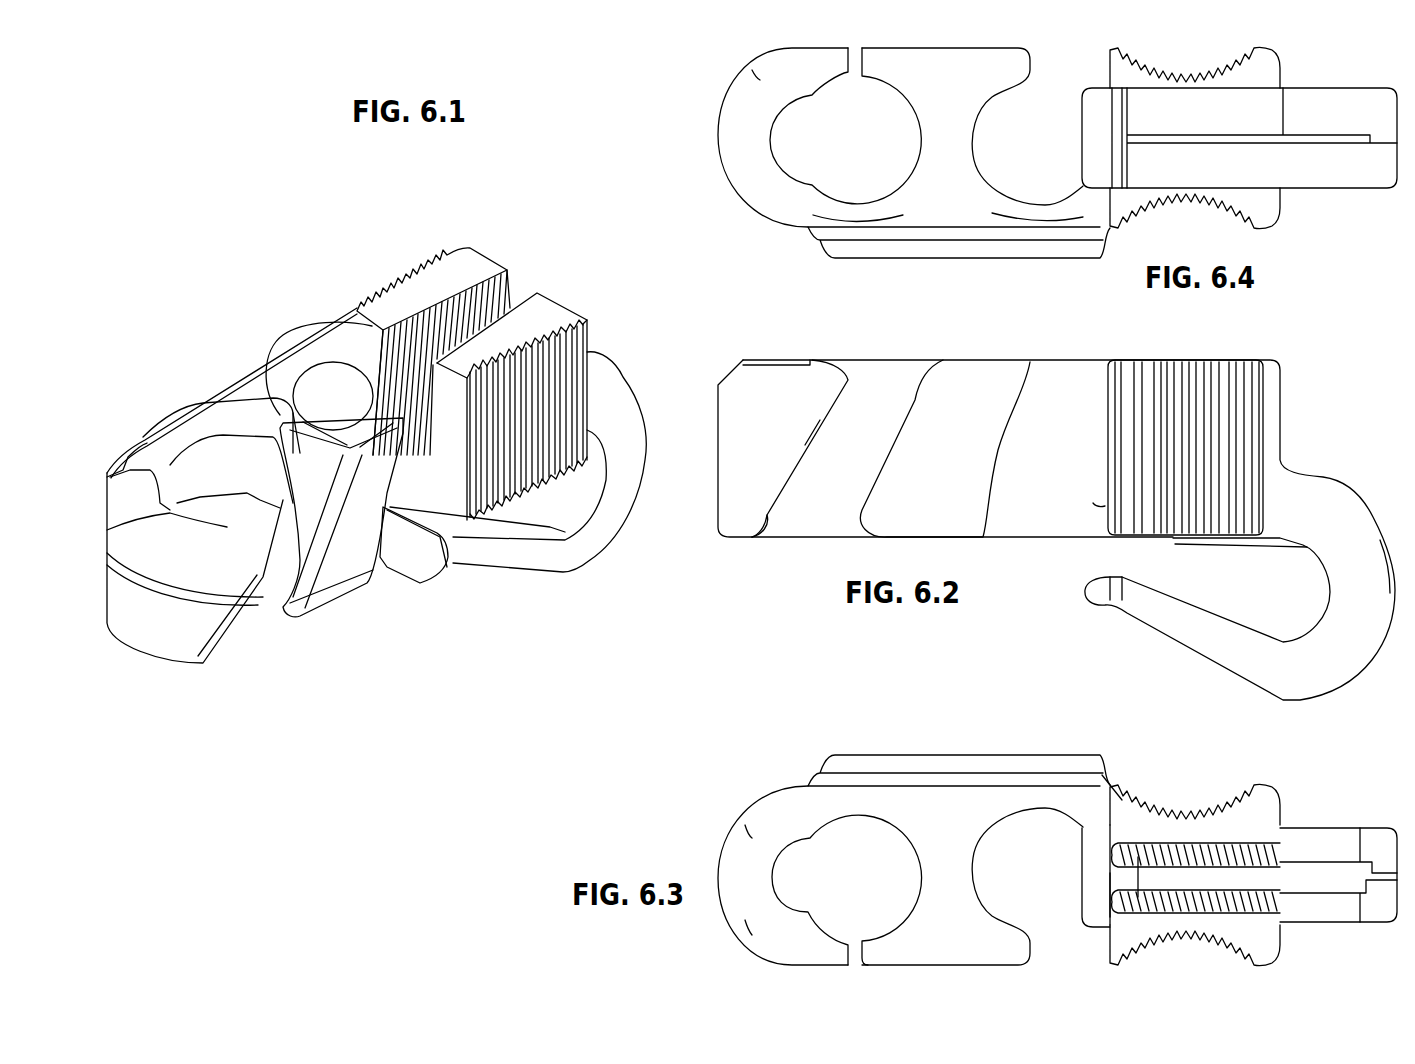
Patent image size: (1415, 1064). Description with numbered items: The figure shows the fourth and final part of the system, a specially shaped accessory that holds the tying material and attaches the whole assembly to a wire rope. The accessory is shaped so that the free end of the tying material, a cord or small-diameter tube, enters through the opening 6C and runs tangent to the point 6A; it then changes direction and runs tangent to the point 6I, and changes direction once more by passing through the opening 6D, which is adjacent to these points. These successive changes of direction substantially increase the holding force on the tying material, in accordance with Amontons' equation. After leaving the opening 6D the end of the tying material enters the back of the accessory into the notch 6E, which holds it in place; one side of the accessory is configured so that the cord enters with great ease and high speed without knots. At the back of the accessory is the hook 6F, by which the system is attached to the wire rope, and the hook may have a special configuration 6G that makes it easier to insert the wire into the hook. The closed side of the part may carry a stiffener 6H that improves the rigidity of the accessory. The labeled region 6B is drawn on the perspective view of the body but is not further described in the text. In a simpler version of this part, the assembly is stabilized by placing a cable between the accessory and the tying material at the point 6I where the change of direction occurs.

In FIG. 6.1, the point 6A is at (131, 500).
In FIG. 6.1, the lower clamp body 6B is at (257, 510).
In FIG. 6.1, the opening 6C is at (230, 453).
In FIG. 6.1, the opening 6D is at (350, 378).
In FIG. 6.1, the notch 6E is at (443, 327).
In FIG. 6.1, the hook 6F is at (597, 527).
In FIG. 6.1, the special configuration 6G is at (447, 563).
In FIG. 6.3, the stiffener 6H is at (983, 757).
In FIG. 6.4, the point 6I is at (945, 127).